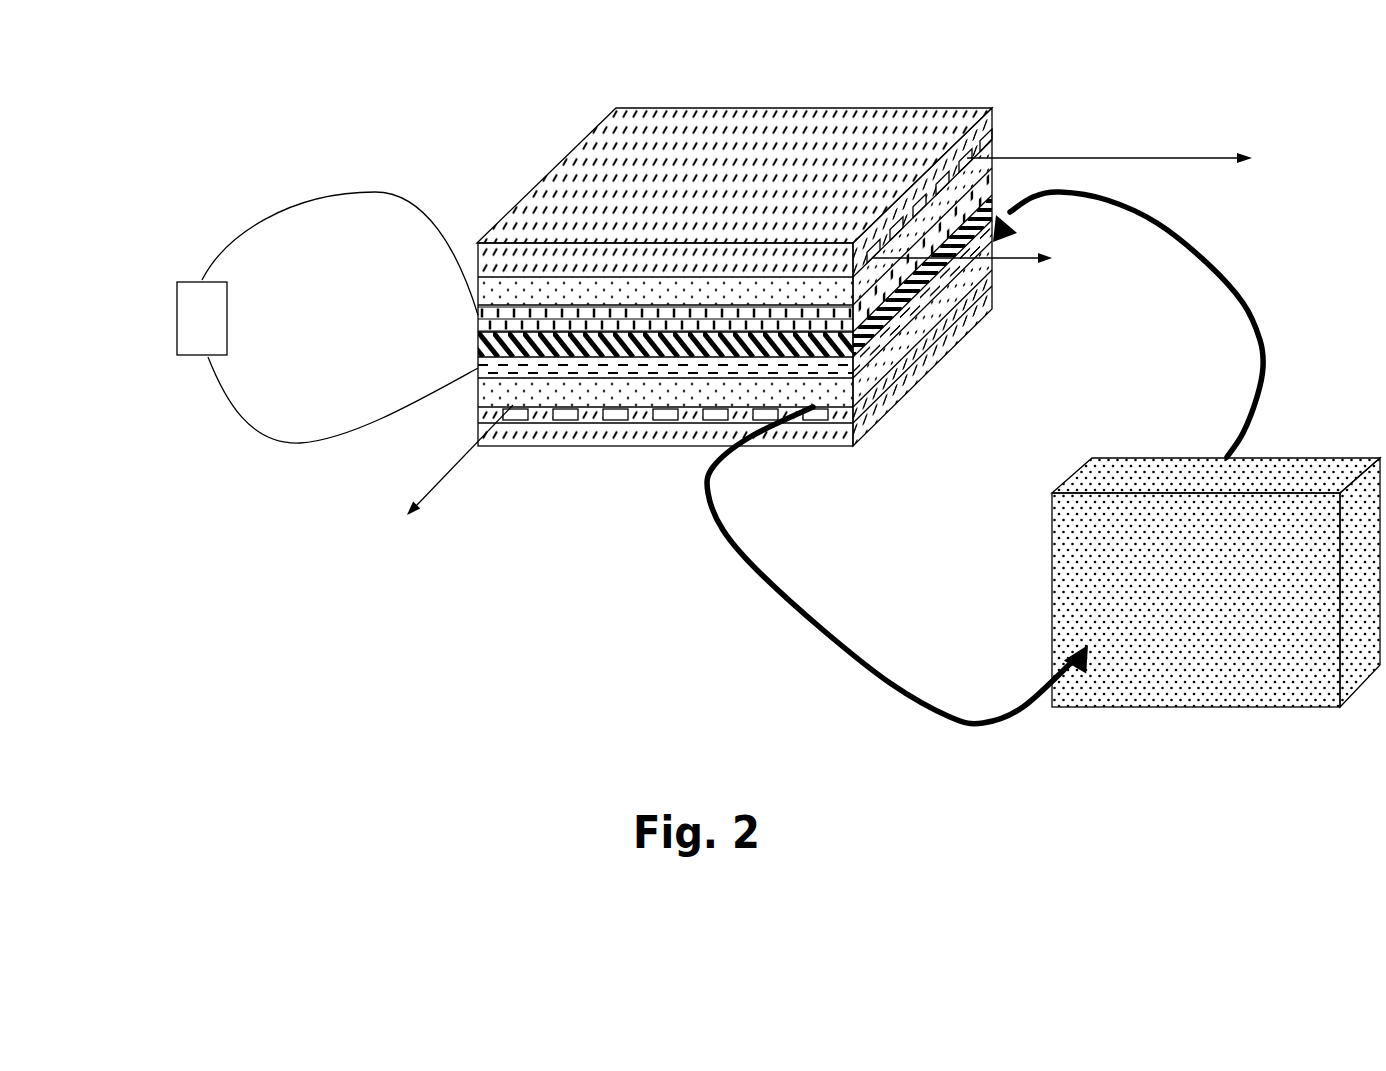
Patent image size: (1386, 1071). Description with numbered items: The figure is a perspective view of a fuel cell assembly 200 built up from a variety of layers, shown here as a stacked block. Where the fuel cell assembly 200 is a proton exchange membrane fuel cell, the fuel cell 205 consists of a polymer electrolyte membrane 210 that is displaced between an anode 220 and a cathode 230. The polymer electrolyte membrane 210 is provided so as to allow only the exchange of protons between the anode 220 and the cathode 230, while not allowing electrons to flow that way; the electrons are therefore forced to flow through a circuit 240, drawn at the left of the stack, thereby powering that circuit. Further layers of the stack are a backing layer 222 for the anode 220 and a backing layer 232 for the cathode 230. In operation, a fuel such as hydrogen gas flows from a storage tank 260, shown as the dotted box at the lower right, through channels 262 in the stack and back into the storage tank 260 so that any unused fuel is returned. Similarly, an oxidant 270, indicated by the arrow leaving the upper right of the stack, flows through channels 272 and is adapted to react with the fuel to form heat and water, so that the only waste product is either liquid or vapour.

The fuel cell assembly 200 is at (400, 752).
The fuel cell 205 is at (928, 95).
The polymer electrolyte membrane 210 is at (477, 343).
The anode 220 is at (868, 350).
The backing layer 222 is at (867, 385).
The cathode 230 is at (477, 316).
The backing layer 232 is at (477, 315).
The circuit 240 is at (222, 343).
The storage tank 260 is at (1073, 572).
The channels 262 is at (476, 428).
The oxidant 270 is at (1093, 160).
The channels 272 is at (988, 140).